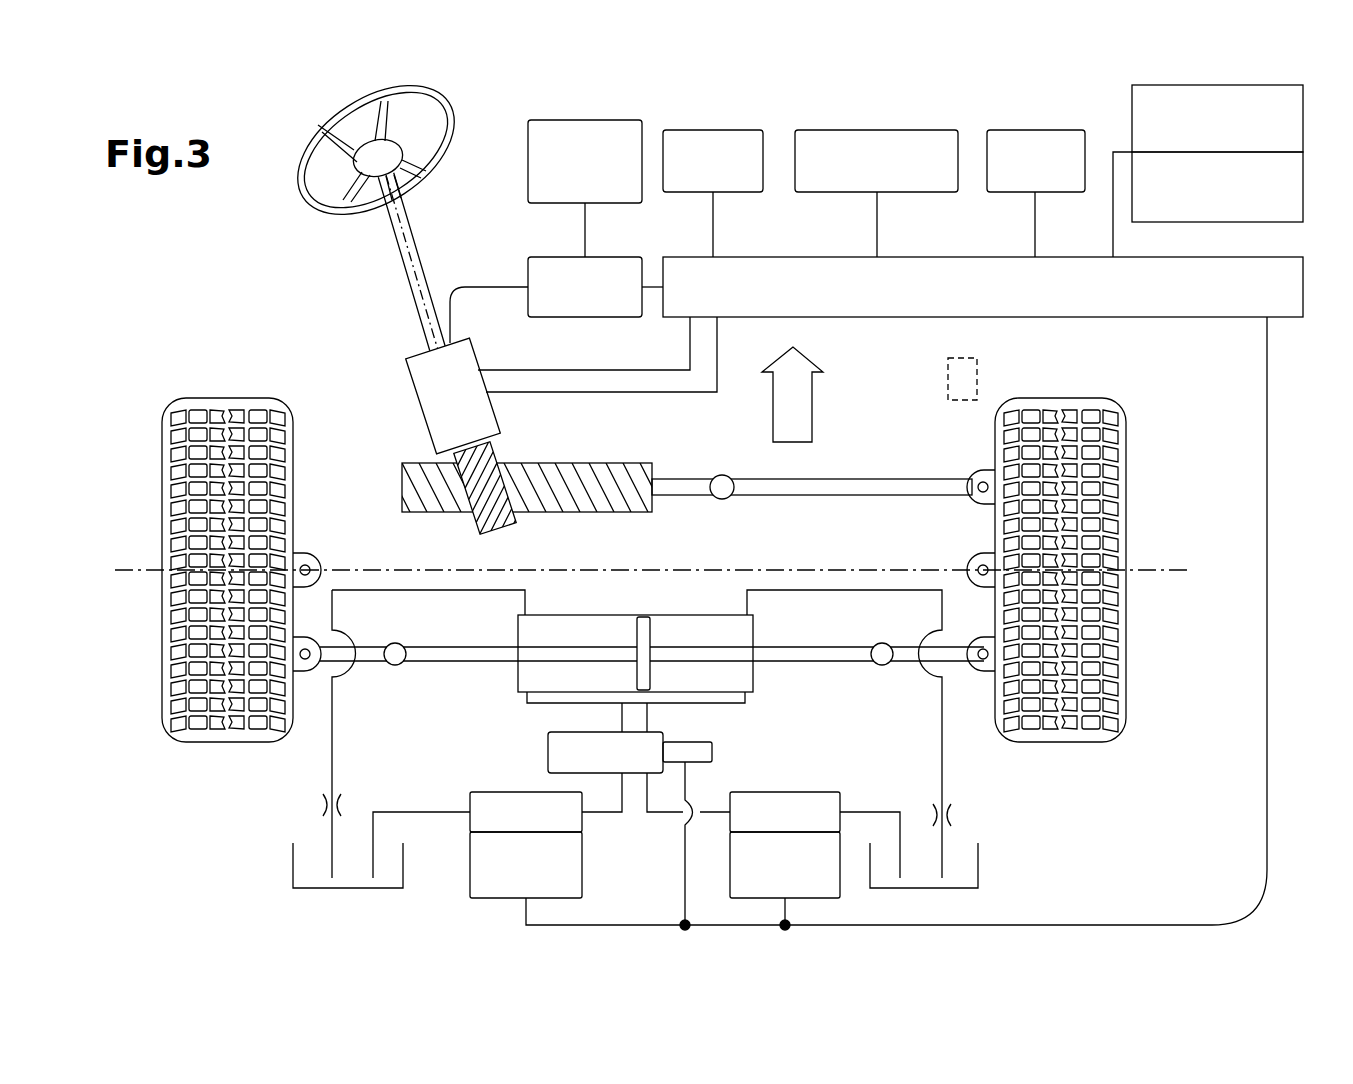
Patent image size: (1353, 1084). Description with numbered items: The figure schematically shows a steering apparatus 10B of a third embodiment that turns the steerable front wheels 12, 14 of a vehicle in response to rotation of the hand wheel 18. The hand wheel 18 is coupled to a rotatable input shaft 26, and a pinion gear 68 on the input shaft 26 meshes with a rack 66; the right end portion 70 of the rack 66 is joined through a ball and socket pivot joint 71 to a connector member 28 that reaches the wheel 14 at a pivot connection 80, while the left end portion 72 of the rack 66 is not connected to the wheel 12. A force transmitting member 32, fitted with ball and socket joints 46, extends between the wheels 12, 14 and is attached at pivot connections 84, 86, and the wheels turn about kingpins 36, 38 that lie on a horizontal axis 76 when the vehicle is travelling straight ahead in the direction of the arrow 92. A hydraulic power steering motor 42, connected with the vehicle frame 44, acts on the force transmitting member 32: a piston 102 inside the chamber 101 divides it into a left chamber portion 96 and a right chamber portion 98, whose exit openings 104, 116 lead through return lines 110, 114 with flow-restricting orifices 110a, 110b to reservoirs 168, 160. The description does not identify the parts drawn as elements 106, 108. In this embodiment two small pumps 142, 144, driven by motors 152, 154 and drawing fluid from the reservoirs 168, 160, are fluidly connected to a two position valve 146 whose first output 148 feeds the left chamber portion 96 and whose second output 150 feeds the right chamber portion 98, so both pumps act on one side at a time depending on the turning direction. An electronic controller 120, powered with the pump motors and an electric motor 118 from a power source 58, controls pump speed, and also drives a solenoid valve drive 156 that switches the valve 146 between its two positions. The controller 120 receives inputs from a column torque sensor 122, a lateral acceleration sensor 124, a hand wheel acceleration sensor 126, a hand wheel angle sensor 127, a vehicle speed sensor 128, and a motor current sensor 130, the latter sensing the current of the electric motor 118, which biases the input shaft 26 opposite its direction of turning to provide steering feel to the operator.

The apparatus 10B is at (262, 132).
The steerable front wheel 12 is at (220, 398).
The steerable front wheel 14 is at (1112, 453).
The hand wheel 18 is at (452, 128).
The input shaft 26 is at (412, 282).
The connector member 28 is at (834, 470).
The force transmitting member 32 is at (953, 675).
The pivot connection 36 is at (312, 560).
The pivot connection 38 is at (980, 565).
The hydraulic power steering motor 42 is at (674, 606).
The frame 44 is at (968, 385).
The ball and socket joints 46 is at (404, 664).
The power source 58 is at (755, 140).
The rack 66 is at (572, 456).
The pinion gear 68 is at (478, 490).
The right end portion 70 is at (622, 480).
The ball and socket pivot joint 71 is at (722, 473).
The left end portion 72 is at (402, 468).
The horizontal axis 76 is at (1153, 568).
The pivot connection 80 is at (978, 482).
The pivot connection 84 is at (980, 645).
The pivot connection 86 is at (306, 642).
The arrow 92 is at (805, 358).
The left chamber portion 96 is at (530, 628).
The right chamber portion 98 is at (742, 674).
The chamber 101 is at (758, 628).
The piston 102 is at (645, 627).
The exit opening 104 is at (528, 613).
The fluid port plate 106 is at (527, 697).
The fluid port 108 is at (745, 700).
The return line 110 is at (432, 590).
The orifice 110a is at (345, 808).
The orifice 110b is at (950, 817).
The return line 114 is at (855, 590).
The exit opening 116 is at (735, 613).
The electric motor 118 is at (538, 318).
The electronic controller 120 is at (1067, 305).
The column torque sensor 122 is at (440, 398).
The lateral acceleration sensor 124 is at (933, 140).
The hand wheel acceleration sensor 126 is at (1132, 103).
The hand wheel angle sensor 127 is at (1270, 204).
The vehicle speed sensor 128 is at (1013, 132).
The motor current sensor 130 is at (630, 130).
The left pump 142 is at (572, 820).
The right pump 144 is at (832, 797).
The two position valve 146 is at (548, 748).
The first output 148 is at (650, 722).
The second output 150 is at (620, 728).
The motor 152 is at (575, 876).
The motor 154 is at (828, 880).
The valve drive 156 is at (702, 751).
The reservoir 160 is at (967, 865).
The reservoir 168 is at (308, 864).